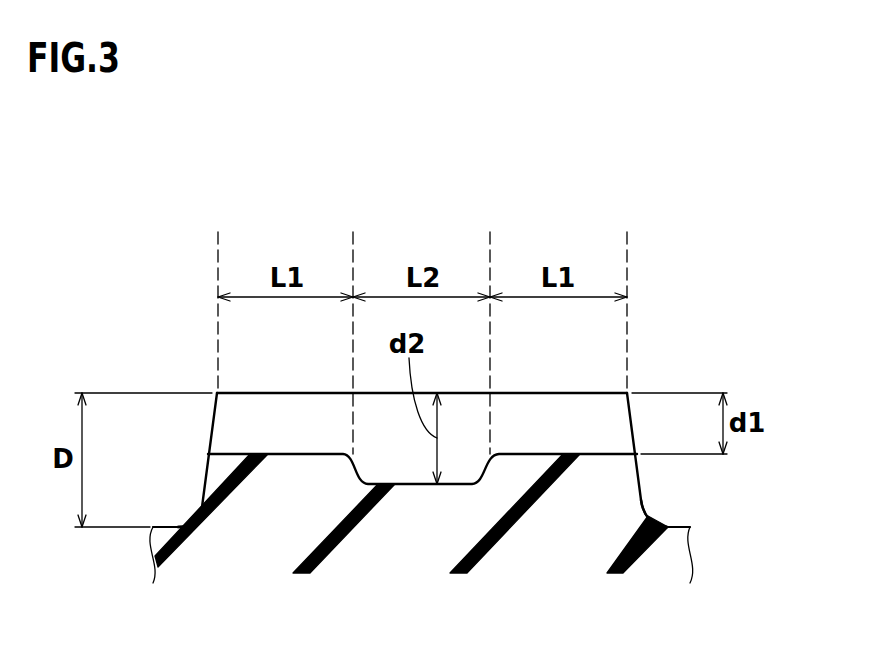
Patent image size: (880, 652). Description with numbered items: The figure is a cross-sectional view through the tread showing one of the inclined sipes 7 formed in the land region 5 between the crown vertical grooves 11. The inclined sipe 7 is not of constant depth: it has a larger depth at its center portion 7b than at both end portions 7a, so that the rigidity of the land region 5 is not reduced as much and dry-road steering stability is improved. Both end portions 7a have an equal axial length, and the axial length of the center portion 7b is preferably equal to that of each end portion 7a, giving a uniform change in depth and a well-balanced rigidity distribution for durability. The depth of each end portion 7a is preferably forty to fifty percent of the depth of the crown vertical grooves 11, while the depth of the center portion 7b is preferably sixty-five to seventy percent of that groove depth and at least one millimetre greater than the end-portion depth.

The land region 5 is at (731, 326).
The inclined sipe 7 is at (543, 420).
The end portion 7a is at (222, 243).
The center portion 7b is at (360, 243).
The crown vertical groove 11 is at (182, 507).